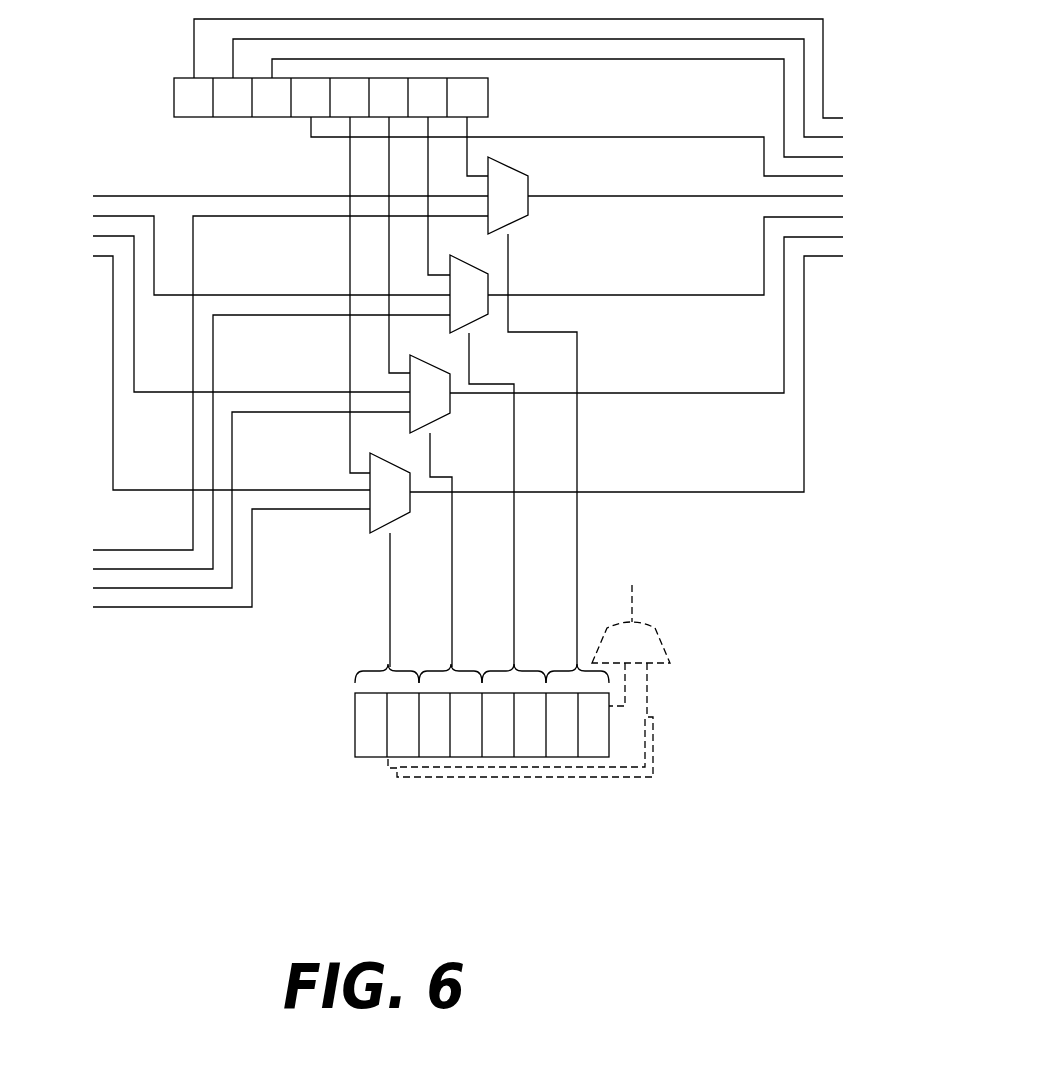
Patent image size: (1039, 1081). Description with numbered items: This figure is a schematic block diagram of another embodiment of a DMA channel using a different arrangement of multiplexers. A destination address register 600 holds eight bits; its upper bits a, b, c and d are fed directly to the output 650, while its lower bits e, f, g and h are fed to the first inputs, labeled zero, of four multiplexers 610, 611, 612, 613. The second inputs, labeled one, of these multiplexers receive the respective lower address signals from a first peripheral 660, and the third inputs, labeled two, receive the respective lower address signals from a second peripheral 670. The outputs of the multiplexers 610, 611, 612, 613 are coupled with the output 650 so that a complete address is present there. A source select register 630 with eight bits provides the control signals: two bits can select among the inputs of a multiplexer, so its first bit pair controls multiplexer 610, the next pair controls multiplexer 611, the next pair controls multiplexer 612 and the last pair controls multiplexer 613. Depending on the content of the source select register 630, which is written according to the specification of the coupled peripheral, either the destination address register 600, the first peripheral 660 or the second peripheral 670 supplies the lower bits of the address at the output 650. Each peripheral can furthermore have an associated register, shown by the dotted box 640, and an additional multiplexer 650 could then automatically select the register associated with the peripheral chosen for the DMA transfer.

The destination address register 600 is at (174, 100).
The multiplexer 610 is at (528, 218).
The multiplexer 611 is at (482, 318).
The multiplexer 612 is at (440, 415).
The multiplexer 613 is at (372, 531).
The source select register 630 is at (520, 757).
The associated register 640 is at (547, 724).
The output 650 is at (660, 418).
The peripheral 660 is at (259, 343).
The peripheral 670 is at (259, 411).